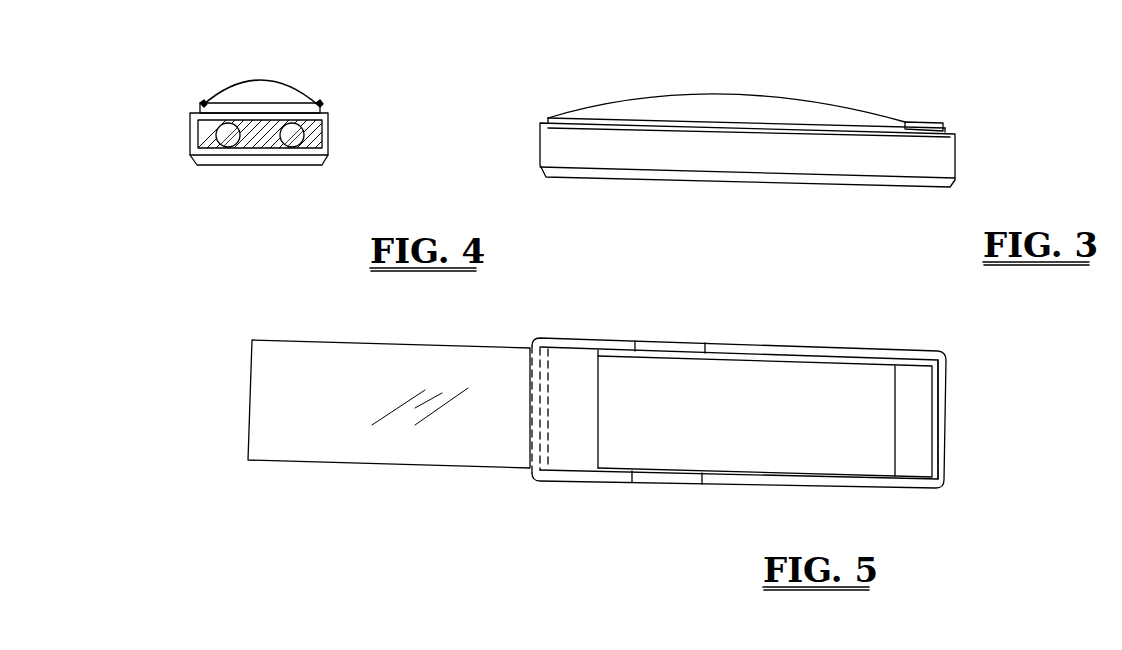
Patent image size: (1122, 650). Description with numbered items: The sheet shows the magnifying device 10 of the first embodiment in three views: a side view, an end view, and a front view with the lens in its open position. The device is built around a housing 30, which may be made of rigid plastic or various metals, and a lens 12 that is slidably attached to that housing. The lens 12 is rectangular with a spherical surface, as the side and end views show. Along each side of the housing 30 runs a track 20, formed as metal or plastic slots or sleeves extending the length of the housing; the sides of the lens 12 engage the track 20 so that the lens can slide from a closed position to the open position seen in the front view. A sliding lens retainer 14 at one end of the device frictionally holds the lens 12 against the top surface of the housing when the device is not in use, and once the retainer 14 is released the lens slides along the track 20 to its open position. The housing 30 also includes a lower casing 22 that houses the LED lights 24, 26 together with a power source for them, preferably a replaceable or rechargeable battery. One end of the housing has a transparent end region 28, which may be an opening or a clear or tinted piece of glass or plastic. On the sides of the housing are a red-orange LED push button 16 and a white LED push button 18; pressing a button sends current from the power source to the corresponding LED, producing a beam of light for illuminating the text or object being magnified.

In FIG. 4, the magnifying device 10 is at (150, 88).
In FIG. 3, the magnifying device 10 is at (537, 103).
In FIG. 5, the magnifying device 10 is at (1010, 355).
In FIG. 4, the lens 12 is at (245, 90).
In FIG. 3, the lens 12 is at (724, 106).
In FIG. 5, the lens 12 is at (401, 450).
In FIG. 3, the sliding lens retainer 14 is at (930, 122).
In FIG. 5, the sliding lens retainer 14 is at (918, 463).
In FIG. 5, the red-orange LED push button 16 is at (675, 346).
In FIG. 5, the white LED push button 18 is at (668, 486).
In FIG. 4, the track 20 is at (319, 107).
In FIG. 4, the lower casing 22 is at (318, 162).
In FIG. 3, the lower casing 22 is at (675, 178).
In FIG. 4, the LED light 24 is at (235, 150).
In FIG. 4, the LED light 26 is at (288, 151).
In FIG. 4, the transparent end region 28 is at (205, 135).
In FIG. 3, the housing 30 is at (950, 155).
In FIG. 5, the housing 30 is at (880, 355).